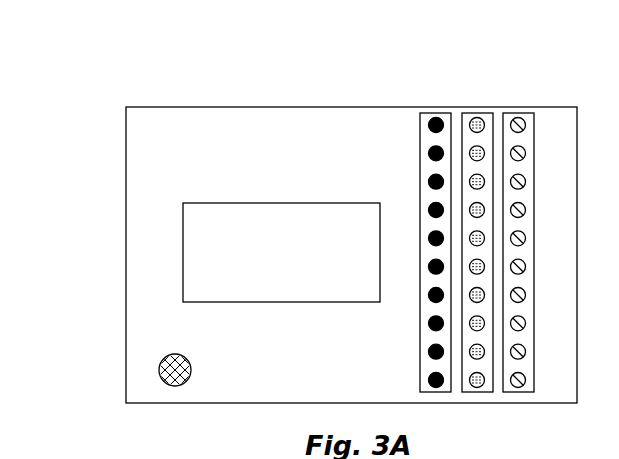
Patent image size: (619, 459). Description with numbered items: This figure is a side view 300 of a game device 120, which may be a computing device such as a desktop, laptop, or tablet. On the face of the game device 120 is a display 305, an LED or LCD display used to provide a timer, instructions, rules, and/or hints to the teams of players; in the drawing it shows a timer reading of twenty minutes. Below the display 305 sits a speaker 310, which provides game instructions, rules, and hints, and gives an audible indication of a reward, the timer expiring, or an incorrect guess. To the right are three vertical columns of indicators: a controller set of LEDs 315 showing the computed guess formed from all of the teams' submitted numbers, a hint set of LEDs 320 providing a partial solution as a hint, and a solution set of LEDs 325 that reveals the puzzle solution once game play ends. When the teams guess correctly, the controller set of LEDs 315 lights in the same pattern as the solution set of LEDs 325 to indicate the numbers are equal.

The side view 300 is at (207, 59).
The game device 120 is at (352, 107).
The display 305 is at (183, 252).
The speaker 310 is at (160, 365).
The controller set of LEDs 315 is at (420, 112).
The hint set of LEDs 320 is at (478, 113).
The solution set of LEDs 325 is at (518, 113).